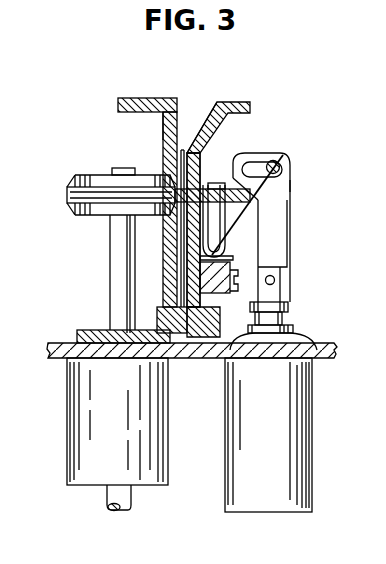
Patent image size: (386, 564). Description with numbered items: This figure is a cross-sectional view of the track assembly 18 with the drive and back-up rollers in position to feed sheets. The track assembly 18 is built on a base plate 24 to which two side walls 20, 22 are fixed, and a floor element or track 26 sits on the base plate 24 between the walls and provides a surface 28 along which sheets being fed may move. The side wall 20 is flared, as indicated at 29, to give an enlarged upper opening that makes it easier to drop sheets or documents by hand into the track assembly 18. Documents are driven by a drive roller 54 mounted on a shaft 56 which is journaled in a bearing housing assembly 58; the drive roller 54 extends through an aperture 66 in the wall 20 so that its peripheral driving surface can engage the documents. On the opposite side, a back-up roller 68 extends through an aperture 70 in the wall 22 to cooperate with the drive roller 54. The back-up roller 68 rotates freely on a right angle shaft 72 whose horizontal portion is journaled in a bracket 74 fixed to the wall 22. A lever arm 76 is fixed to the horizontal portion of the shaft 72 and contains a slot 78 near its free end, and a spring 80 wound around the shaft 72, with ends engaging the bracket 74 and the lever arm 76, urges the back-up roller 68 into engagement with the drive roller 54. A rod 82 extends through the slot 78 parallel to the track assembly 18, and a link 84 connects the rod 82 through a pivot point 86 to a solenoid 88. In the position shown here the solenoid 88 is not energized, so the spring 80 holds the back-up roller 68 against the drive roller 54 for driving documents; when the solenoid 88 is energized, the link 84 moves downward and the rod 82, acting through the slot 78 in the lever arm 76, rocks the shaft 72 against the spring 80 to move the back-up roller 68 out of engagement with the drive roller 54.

The track assembly 18 is at (146, 86).
The side wall 20 is at (162, 126).
The side wall 22 is at (198, 154).
The base plate 24 is at (63, 358).
The floor element or track 26 is at (168, 334).
The surface 28 is at (162, 310).
The flared portion 29 is at (203, 140).
The drive roller 54 is at (75, 200).
The shaft 56 is at (120, 278).
The bearing housing assembly 58 is at (75, 417).
The aperture 66 is at (163, 168).
The back-up roller 68 is at (260, 202).
The aperture 70 is at (204, 186).
The right angle shaft 72 is at (222, 192).
The bracket 74 is at (208, 282).
The lever arm 76 is at (260, 190).
The slot 78 is at (291, 186).
The spring 80 is at (170, 250).
The rod 82 is at (276, 163).
The link 84 is at (282, 257).
The pivot point 86 is at (274, 283).
The solenoid 88 is at (303, 467).